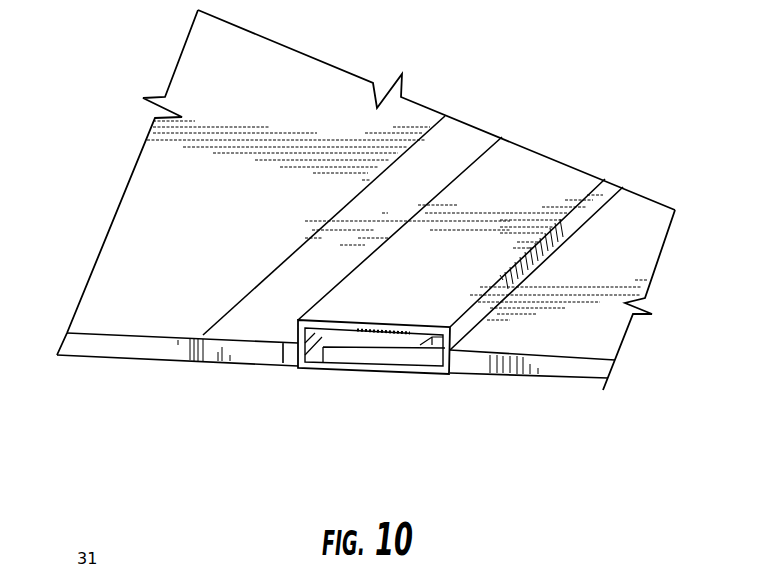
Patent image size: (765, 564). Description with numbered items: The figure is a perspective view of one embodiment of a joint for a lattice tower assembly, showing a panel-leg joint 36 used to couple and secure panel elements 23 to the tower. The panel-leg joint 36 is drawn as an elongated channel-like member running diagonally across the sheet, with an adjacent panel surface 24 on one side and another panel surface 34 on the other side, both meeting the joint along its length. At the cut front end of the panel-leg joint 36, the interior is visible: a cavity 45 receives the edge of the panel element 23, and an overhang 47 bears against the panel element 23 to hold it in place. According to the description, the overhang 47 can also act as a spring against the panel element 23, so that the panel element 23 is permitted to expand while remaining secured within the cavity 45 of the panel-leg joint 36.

The panel element 23 is at (571, 342).
The first panel 24 is at (163, 172).
The second panel 34 is at (528, 180).
The panel-leg joint 36 is at (362, 298).
The cavity 45 is at (298, 342).
The overhang 47 is at (447, 343).